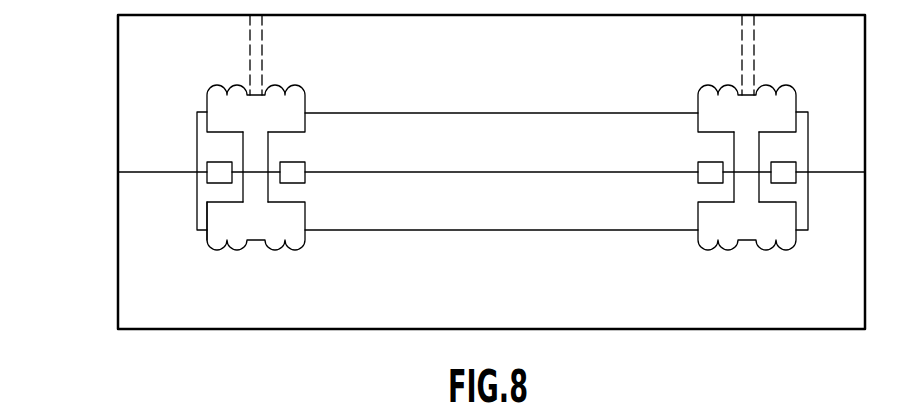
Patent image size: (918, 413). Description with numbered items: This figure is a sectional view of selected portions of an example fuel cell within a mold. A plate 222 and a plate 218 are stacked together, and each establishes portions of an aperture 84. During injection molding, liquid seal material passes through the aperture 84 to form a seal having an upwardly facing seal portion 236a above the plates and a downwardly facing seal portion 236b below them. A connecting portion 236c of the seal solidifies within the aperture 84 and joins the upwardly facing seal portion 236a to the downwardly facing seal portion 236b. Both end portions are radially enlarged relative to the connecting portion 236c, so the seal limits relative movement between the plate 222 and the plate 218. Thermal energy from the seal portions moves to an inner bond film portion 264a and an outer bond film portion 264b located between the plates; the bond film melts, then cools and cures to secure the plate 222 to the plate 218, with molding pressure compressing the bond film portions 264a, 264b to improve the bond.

The upwardly facing seal portion 236a is at (213, 96).
The plate 222 is at (197, 128).
The aperture 84 is at (243, 145).
The inner bond film portion 264a is at (207, 173).
The connecting portion 236c is at (260, 188).
The plate 218 is at (203, 200).
The downwardly facing seal portion 236b is at (218, 220).
The outer bond film portion 264b is at (297, 175).